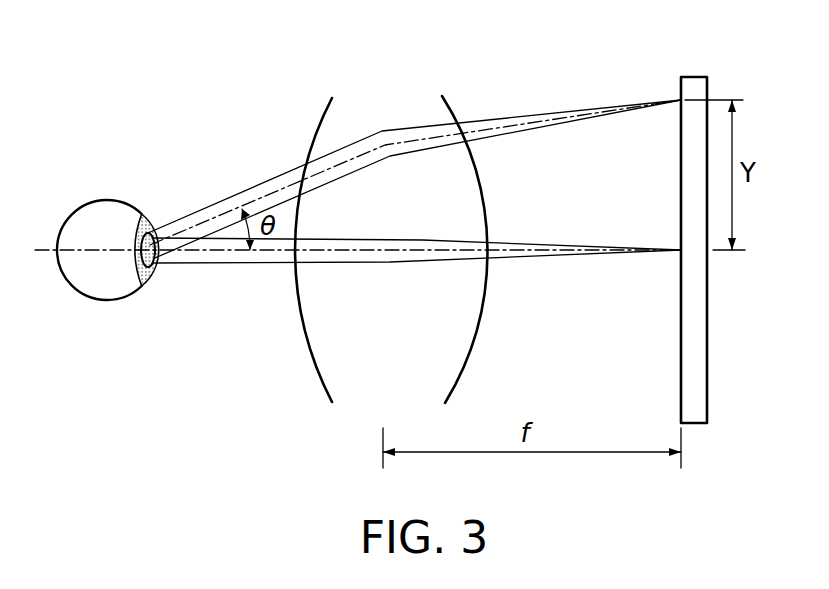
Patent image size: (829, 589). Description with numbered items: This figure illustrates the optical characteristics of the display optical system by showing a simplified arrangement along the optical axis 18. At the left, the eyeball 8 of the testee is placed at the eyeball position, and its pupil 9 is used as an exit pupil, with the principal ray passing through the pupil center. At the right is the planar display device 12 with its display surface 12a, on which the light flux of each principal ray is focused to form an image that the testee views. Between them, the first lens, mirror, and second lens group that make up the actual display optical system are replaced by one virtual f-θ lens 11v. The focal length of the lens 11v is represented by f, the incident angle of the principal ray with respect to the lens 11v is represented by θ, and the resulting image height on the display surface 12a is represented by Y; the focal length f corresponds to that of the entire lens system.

The eyeball 8 is at (83, 202).
The pupil 9 is at (155, 238).
The virtual lens 11v is at (322, 128).
The planar display device 12 is at (698, 77).
The display surface 12a is at (678, 333).
The optical axis 18 is at (520, 250).